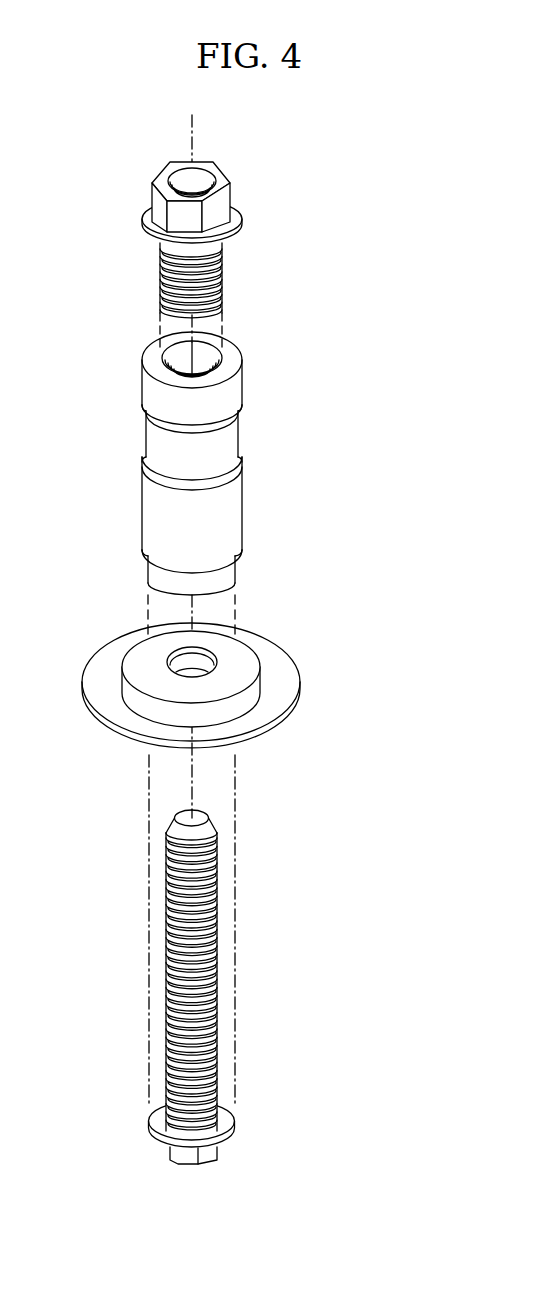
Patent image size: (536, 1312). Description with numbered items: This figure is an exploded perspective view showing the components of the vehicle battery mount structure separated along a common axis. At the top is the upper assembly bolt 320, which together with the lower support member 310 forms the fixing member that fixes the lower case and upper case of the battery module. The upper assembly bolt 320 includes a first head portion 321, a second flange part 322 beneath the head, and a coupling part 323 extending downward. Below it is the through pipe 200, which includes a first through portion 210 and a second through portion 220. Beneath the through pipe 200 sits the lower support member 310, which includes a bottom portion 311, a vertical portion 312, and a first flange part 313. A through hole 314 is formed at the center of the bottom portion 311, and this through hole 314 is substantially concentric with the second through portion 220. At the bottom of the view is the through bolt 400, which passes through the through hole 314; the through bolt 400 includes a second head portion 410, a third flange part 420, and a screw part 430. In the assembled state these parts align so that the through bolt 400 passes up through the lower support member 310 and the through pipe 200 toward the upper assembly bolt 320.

The through pipe 200 is at (271, 463).
The first through portion 210 is at (252, 357).
The second through portion 220 is at (229, 526).
The lower support member 310 is at (246, 671).
The bottom portion 311 is at (240, 665).
The vertical portion 312 is at (260, 678).
The first flange part 313 is at (287, 701).
The through hole 314 is at (186, 666).
The upper assembly bolt 320 is at (283, 243).
The first head portion 321 is at (231, 177).
The second flange part 322 is at (240, 200).
The coupling part 323 is at (259, 295).
The through bolt 400 is at (272, 996).
The second head portion 410 is at (211, 1160).
The third flange part 420 is at (235, 1128).
The screw part 430 is at (220, 1065).